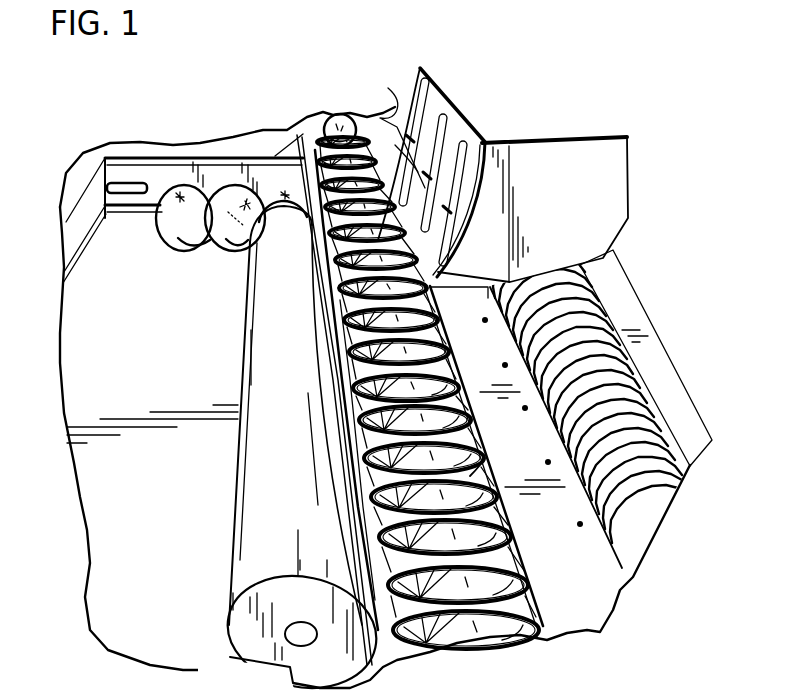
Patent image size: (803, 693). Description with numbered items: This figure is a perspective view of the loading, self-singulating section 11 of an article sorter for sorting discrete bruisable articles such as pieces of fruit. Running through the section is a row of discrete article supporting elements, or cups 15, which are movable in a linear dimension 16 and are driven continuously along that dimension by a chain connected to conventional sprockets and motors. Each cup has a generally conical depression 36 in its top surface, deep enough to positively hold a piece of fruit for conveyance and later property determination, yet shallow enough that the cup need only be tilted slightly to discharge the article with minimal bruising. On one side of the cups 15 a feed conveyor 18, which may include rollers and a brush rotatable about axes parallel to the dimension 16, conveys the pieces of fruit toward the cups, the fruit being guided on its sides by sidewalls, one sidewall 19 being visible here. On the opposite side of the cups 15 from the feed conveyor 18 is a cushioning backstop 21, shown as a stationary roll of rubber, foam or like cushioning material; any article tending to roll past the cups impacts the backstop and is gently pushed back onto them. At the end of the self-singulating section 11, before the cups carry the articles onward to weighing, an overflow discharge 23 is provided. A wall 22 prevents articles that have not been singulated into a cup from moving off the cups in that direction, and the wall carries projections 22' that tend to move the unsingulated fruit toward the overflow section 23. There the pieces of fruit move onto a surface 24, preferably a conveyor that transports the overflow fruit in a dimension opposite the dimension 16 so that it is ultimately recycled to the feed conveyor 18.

The self-singulating section 11 is at (155, 346).
The article supporting elements (cups) 15 is at (483, 593).
The linear dimension of movement 16 is at (197, 350).
The feed conveyor 18 is at (673, 277).
The sidewall 19 is at (545, 162).
The cushioning backstop 21 is at (240, 547).
The wall 22 is at (445, 172).
The projections 22' is at (391, 130).
The overflow discharge 23 is at (176, 138).
The surface 24 is at (98, 530).
The depression 36 is at (478, 472).